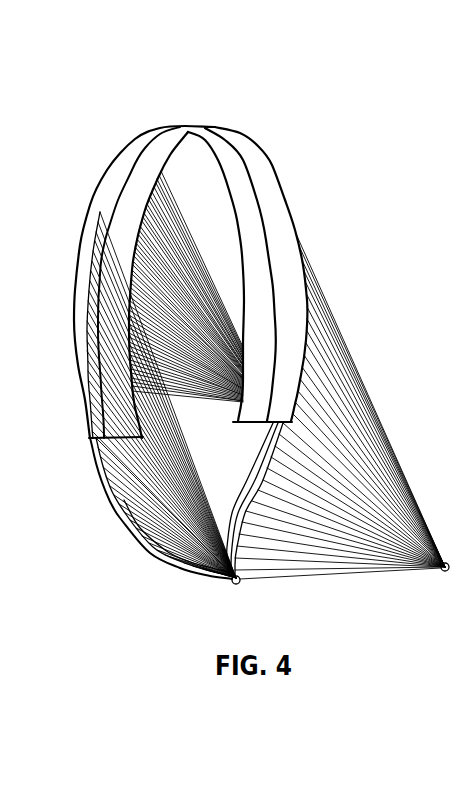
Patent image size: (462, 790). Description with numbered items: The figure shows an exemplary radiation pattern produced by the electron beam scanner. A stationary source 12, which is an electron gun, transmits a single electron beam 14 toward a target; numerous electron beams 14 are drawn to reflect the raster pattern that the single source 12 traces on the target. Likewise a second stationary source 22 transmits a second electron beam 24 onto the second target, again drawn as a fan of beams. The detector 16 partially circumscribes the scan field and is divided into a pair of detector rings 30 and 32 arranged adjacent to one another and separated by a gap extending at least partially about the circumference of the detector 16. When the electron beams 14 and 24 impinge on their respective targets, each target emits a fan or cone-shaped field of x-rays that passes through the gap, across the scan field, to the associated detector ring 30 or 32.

The stationary source 12 is at (437, 582).
The electron beam 14 is at (348, 425).
The detector 16 is at (262, 180).
The second stationary source 22 is at (227, 596).
The second electron beam 24 is at (136, 520).
The detector ring 30 is at (158, 152).
The detector ring 32 is at (104, 197).